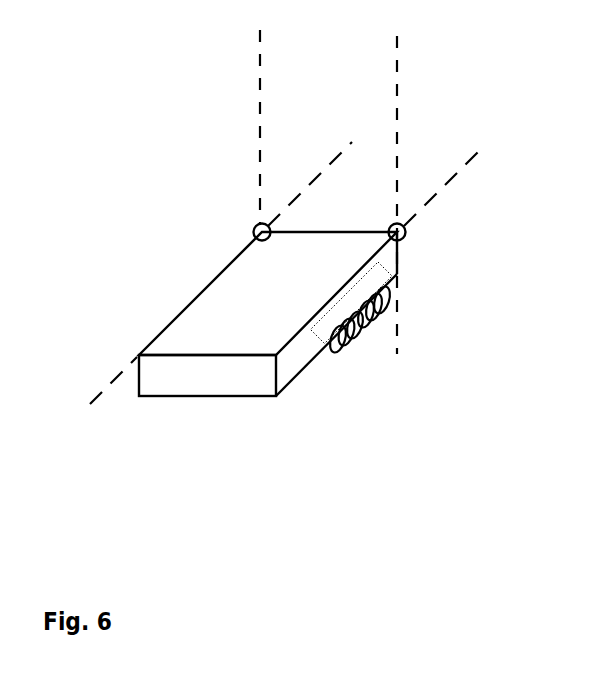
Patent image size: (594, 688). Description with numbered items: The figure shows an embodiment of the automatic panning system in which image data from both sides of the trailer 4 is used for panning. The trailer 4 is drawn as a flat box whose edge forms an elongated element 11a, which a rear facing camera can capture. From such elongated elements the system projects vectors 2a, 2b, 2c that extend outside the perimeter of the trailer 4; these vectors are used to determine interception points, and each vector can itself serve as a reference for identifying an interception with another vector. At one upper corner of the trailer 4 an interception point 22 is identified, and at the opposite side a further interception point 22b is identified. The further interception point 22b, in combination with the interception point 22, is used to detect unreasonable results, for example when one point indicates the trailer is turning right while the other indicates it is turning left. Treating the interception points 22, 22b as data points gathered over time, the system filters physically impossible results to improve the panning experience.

The vector 2a is at (462, 212).
The vector 2b is at (397, 112).
The vector 2c is at (478, 150).
The trailer 4 is at (230, 297).
The elongated element 11a is at (305, 370).
The interception point 22 is at (402, 242).
The further interception point 22b is at (255, 218).